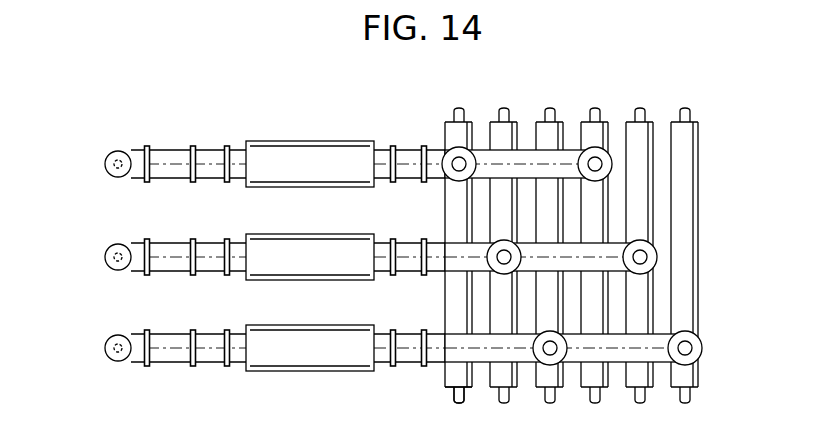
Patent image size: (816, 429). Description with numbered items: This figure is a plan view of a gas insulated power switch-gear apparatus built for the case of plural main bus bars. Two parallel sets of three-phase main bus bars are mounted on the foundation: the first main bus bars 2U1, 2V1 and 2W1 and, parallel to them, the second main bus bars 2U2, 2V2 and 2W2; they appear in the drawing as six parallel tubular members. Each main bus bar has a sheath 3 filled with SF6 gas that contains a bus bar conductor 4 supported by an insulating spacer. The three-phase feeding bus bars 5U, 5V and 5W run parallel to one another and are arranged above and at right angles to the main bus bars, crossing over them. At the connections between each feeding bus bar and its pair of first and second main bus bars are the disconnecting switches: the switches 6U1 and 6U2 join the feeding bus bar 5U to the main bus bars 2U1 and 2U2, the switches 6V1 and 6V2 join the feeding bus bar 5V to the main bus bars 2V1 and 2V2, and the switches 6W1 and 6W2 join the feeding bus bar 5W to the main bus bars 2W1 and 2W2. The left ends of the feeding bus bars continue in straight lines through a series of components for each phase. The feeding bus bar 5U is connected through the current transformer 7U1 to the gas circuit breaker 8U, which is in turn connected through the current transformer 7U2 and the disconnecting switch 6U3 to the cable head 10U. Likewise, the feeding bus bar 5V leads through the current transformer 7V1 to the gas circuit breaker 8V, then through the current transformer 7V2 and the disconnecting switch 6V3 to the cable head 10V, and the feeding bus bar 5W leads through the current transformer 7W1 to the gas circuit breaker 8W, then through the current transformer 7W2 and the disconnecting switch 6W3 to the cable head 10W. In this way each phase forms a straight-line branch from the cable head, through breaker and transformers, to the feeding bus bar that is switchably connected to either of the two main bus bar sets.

The cable head 10U is at (105, 163).
The cable head 10V is at (105, 256).
The cable head 10W is at (105, 347).
The disconnecting switch 6U3 is at (161, 150).
The disconnecting switch 6V3 is at (161, 243).
The disconnecting switch 6W3 is at (161, 334).
The current transformer 7U2 is at (214, 150).
The current transformer 7V2 is at (214, 243).
The current transformer 7W2 is at (214, 334).
The gas circuit breaker 8U is at (311, 147).
The gas circuit breaker 8V is at (311, 240).
The gas circuit breaker 8W is at (313, 331).
The current transformer 7U1 is at (405, 150).
The current transformer 7V1 is at (402, 243).
The current transformer 7W1 is at (404, 334).
The disconnecting switch 6U1 is at (447, 177).
The disconnecting switch 6V1 is at (490, 268).
The disconnecting switch 6W1 is at (547, 362).
The disconnecting switch 6U2 is at (612, 160).
The disconnecting switch 6V2 is at (618, 280).
The disconnecting switch 6W2 is at (703, 348).
The feeding bus bar 5U is at (571, 158).
The feeding bus bar 5V is at (660, 288).
The feeding bus bar 5W is at (618, 355).
The first main bus bar 2U1 is at (447, 122).
The first main bus bar 2V1 is at (492, 122).
The first main bus bar 2W1 is at (538, 122).
The second main bus bar 2U2 is at (583, 122).
The second main bus bar 2V2 is at (651, 122).
The second main bus bar 2W2 is at (697, 124).
The sheath 3 is at (445, 375).
The bus bar conductor 4 is at (454, 396).